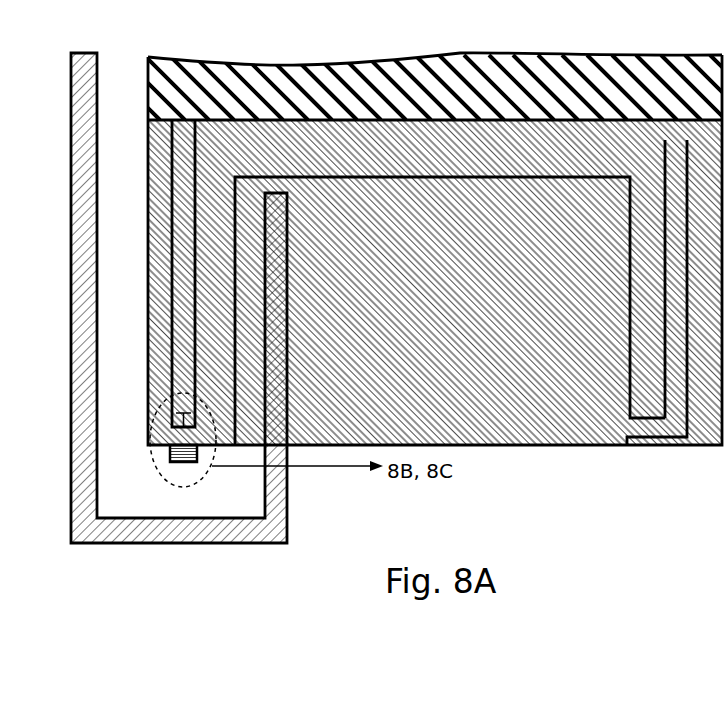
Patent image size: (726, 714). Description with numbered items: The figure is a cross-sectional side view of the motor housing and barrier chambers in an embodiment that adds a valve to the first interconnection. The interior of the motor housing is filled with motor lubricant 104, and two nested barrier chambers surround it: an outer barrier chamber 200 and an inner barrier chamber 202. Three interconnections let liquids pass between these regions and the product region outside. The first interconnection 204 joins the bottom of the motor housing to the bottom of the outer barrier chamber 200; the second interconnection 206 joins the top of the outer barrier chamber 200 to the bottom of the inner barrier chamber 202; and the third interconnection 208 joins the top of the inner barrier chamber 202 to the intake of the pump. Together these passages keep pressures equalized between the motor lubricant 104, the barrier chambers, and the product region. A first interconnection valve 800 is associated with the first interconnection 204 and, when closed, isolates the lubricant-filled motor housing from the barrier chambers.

The motor lubricant 104 is at (440, 102).
The outer barrier chamber 200 is at (424, 162).
The inner barrier chamber 202 is at (421, 292).
The first interconnection 204 is at (196, 152).
The second interconnection 206 is at (665, 143).
The third interconnection 208 is at (157, 545).
The first interconnection valve 800 is at (165, 463).